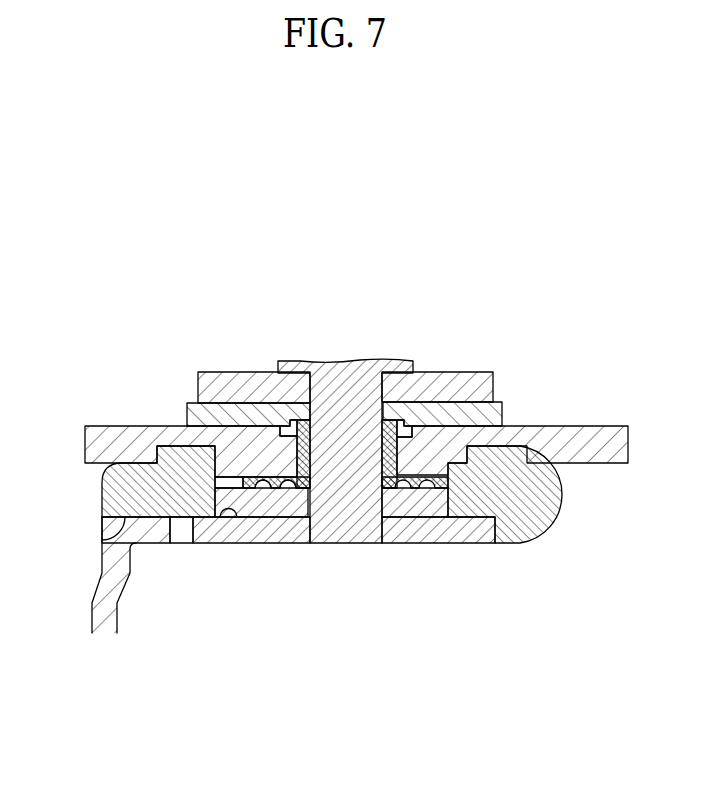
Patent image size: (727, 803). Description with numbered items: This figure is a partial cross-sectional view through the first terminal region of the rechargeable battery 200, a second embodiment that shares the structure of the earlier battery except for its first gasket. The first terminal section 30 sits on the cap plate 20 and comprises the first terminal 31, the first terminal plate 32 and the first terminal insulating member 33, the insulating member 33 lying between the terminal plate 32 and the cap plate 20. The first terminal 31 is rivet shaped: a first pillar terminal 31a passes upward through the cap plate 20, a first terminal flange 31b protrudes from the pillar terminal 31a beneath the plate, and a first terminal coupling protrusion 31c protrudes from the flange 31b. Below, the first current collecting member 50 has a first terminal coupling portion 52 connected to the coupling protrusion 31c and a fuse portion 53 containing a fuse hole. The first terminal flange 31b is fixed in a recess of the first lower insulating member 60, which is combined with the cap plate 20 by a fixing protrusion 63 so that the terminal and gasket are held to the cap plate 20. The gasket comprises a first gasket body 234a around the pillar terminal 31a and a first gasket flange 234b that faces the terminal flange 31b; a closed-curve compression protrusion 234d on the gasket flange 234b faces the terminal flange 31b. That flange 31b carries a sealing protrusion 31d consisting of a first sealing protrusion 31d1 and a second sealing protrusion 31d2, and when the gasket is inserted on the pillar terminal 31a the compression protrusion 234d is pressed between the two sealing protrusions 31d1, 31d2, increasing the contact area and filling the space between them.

The rechargeable battery 200 is at (348, 215).
The cap plate 20 is at (606, 422).
The first terminal section 30 is at (527, 307).
The first terminal plate 32 is at (469, 386).
The first terminal insulating member 33 is at (495, 412).
The first gasket body 234a is at (272, 478).
The first gasket flange 234b is at (283, 440).
The compression protrusion 234d is at (250, 478).
The first terminal 31 is at (623, 642).
The first pillar terminal 31a is at (350, 447).
The first terminal flange 31b is at (433, 503).
The first terminal coupling protrusion 31c is at (331, 522).
The sealing protrusion 31d is at (332, 674).
The first sealing protrusion 31d1 is at (303, 492).
The second sealing protrusion 31d2 is at (285, 490).
The first current collecting member 50 is at (80, 601).
The first terminal coupling portion 52 is at (152, 533).
The fuse portion 53 is at (183, 533).
The first lower insulating member 60 is at (539, 534).
The fixing protrusion 63 is at (237, 505).